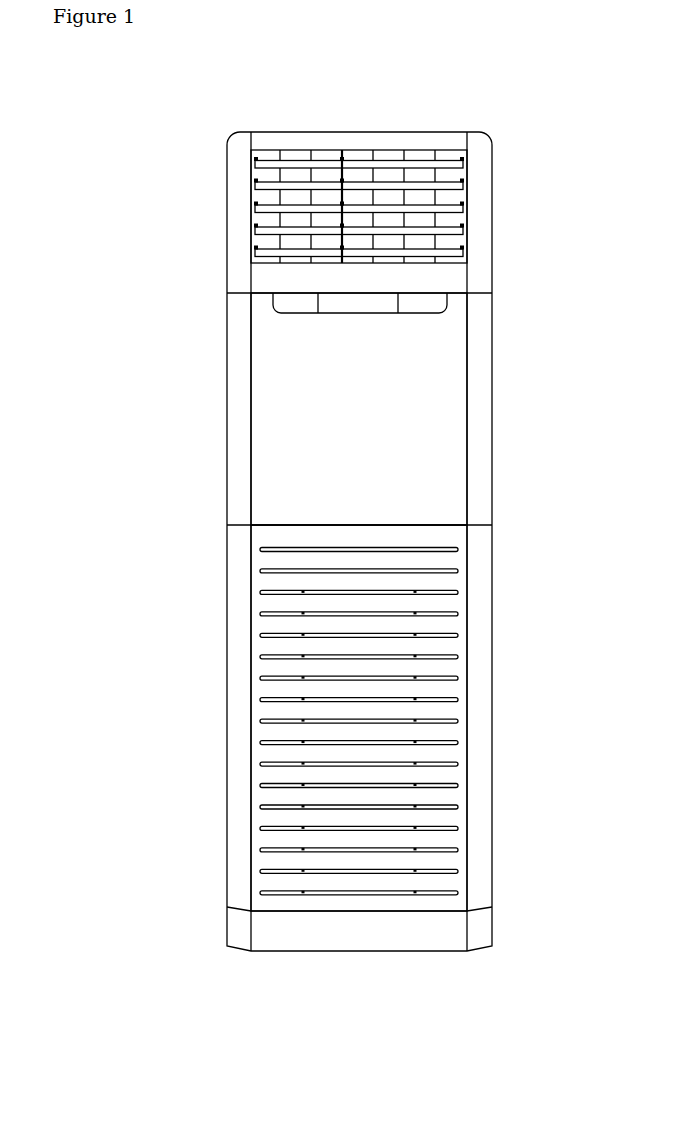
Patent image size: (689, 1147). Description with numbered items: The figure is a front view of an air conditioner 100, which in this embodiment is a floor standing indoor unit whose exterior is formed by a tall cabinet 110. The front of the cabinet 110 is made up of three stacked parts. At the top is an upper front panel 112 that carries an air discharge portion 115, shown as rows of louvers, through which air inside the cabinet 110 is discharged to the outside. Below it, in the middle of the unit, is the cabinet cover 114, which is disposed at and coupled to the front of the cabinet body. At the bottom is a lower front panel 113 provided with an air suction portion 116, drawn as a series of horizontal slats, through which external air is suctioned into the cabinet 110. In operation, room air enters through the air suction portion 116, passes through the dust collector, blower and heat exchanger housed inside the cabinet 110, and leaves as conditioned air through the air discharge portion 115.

The air conditioner 100 is at (154, 73).
The cabinet 110 is at (502, 374).
The upper front panel 112 is at (450, 278).
The lower front panel 113 is at (448, 563).
The cabinet cover 114 is at (268, 450).
The air discharge portion 115 is at (448, 178).
The air suction portion 116 is at (447, 678).